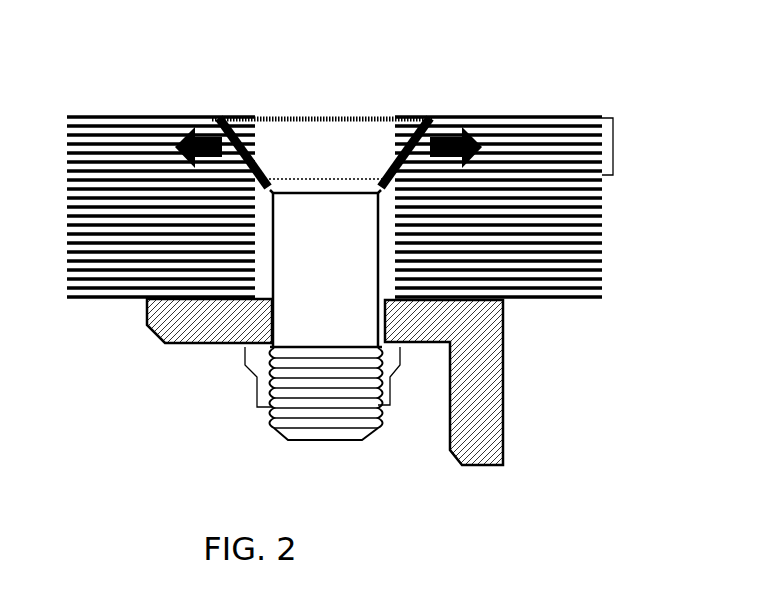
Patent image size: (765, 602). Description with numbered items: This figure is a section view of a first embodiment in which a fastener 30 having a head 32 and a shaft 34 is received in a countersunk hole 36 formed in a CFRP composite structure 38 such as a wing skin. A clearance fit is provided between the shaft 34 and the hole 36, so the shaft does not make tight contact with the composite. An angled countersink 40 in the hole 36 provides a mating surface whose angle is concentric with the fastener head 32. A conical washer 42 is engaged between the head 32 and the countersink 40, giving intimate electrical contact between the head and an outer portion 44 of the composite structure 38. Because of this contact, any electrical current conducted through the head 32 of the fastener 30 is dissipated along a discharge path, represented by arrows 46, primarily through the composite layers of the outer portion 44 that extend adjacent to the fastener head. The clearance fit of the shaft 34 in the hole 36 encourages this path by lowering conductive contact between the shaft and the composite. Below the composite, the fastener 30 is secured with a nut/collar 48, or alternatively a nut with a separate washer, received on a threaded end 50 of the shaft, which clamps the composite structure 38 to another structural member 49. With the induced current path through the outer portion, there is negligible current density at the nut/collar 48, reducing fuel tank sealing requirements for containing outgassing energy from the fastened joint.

The fastener 30 is at (302, 117).
The head 32 is at (353, 153).
The shaft 34 is at (348, 273).
The countersunk hole 36 is at (262, 235).
The CFRP composite structure 38 is at (562, 160).
The angled countersink 40 is at (413, 160).
The conical washer 42 is at (213, 117).
The outer portion 44 is at (613, 148).
The arrows 46 is at (178, 149).
The nut/collar 48 is at (243, 368).
The structural member 49 is at (490, 370).
The threaded end 50 is at (318, 400).